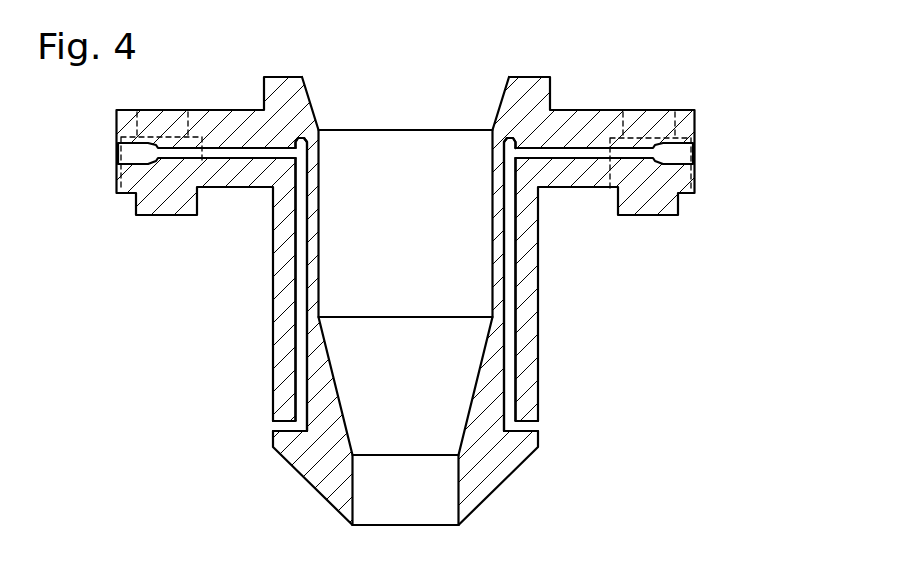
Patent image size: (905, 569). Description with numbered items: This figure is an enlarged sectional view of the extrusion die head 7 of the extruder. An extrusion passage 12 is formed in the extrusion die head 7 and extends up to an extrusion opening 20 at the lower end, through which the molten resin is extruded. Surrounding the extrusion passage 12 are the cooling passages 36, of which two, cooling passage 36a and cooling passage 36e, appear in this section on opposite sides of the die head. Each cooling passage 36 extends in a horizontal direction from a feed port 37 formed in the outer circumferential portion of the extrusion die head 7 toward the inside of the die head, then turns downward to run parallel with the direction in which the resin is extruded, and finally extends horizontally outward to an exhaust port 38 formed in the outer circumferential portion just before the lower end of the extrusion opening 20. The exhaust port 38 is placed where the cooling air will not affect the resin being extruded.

The extrusion die head 7 is at (553, 78).
The extrusion passage 12 is at (486, 284).
The extrusion opening 20 is at (425, 527).
The cooling passage 36 is at (406, 284).
The cooling passage 36a is at (300, 247).
The cooling passage 36e is at (510, 343).
The feed port 37 is at (124, 150).
The exhaust port 38 is at (283, 423).